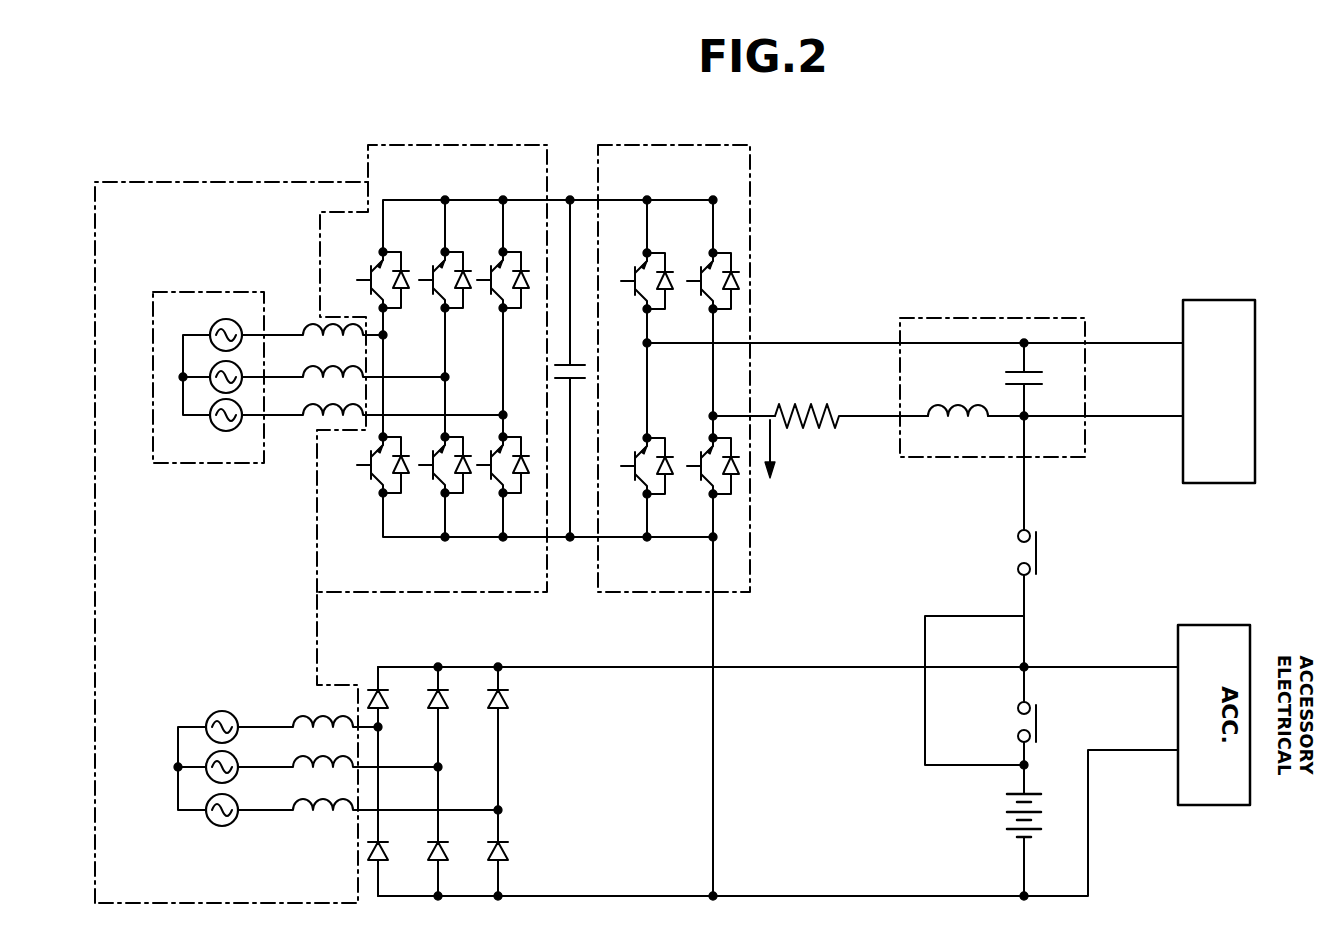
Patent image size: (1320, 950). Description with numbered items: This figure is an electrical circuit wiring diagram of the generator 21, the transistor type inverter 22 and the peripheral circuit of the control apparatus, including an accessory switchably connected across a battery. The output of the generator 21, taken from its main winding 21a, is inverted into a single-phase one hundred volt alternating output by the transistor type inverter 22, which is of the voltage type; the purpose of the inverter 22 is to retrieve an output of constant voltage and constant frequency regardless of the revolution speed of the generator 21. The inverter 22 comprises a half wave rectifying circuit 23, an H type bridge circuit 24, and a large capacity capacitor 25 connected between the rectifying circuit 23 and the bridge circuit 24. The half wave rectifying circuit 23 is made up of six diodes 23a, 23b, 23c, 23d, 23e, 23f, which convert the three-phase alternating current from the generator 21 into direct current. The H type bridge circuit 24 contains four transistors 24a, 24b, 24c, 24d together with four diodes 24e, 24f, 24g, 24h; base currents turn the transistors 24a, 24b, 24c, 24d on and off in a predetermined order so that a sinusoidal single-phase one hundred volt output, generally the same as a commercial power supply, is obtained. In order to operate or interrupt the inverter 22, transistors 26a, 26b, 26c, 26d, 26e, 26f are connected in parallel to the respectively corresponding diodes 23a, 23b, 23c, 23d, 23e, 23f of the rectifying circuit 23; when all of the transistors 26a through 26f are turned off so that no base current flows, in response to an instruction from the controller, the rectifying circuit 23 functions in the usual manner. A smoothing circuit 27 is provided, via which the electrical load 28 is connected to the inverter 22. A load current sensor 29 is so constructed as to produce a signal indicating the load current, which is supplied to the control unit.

The generator 21 is at (248, 182).
The main winding 21a is at (203, 466).
The transistor type inverter 22 is at (607, 134).
The half wave rectifying circuit 23 is at (468, 145).
The diode 23a is at (414, 262).
The diode 23b is at (476, 280).
The diode 23c is at (530, 270).
The diode 23d is at (413, 460).
The diode 23e is at (473, 458).
The diode 23f is at (530, 478).
The H type bridge circuit 24 is at (752, 195).
The transistor 24a is at (624, 276).
The transistor 24b is at (690, 287).
The transistor 24c is at (624, 478).
The transistor 24d is at (690, 483).
The diode 24e is at (677, 274).
The diode 24f is at (742, 283).
The diode 24g is at (673, 462).
The diode 24h is at (738, 467).
The large capacity capacitor 25 is at (580, 360).
The transistor 26a is at (358, 282).
The transistor 26b is at (424, 292).
The transistor 26c is at (488, 292).
The transistor 26d is at (358, 466).
The transistor 26e is at (424, 470).
The transistor 26f is at (480, 470).
The smoothing circuit 27 is at (1020, 318).
The electrical load 28 is at (1216, 300).
The load current sensor 29 is at (820, 422).